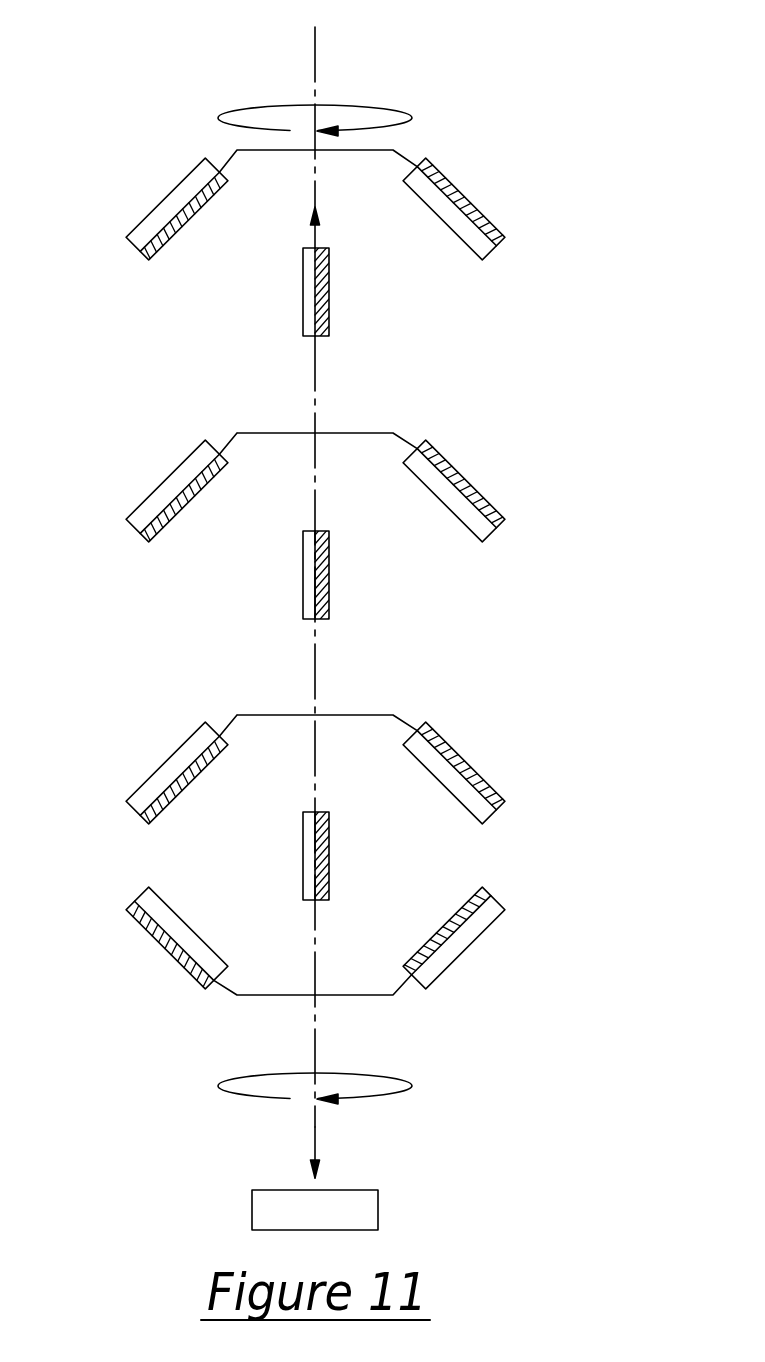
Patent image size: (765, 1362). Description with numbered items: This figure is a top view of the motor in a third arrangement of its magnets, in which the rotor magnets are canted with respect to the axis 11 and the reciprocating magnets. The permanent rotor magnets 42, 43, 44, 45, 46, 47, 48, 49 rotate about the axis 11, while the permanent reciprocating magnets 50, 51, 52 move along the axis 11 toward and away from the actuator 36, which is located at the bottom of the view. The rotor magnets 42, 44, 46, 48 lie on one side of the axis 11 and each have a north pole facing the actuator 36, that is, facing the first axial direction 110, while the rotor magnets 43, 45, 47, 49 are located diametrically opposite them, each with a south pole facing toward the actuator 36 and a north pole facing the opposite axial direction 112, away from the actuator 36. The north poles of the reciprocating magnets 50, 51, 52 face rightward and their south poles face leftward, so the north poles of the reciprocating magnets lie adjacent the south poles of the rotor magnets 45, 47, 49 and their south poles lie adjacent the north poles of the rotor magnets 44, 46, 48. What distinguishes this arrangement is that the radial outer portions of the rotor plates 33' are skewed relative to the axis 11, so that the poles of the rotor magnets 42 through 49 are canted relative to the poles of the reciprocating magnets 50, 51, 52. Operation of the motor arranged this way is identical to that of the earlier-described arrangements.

The axis 11 is at (313, 53).
The rotor plates 33' is at (358, 580).
The opposite axial direction 112 is at (313, 212).
The first axial direction 110 is at (312, 1166).
The rotor magnet 42 is at (141, 896).
The rotor magnet 43 is at (492, 891).
The rotor magnet 44 is at (142, 820).
The rotor magnet 45 is at (489, 822).
The rotor magnet 46 is at (142, 538).
The rotor magnet 47 is at (489, 540).
The rotor magnet 48 is at (142, 257).
The rotor magnet 49 is at (489, 259).
The reciprocating magnet 50 is at (324, 899).
The reciprocating magnet 51 is at (324, 618).
The reciprocating magnet 52 is at (323, 335).
The actuator 36 is at (379, 1209).